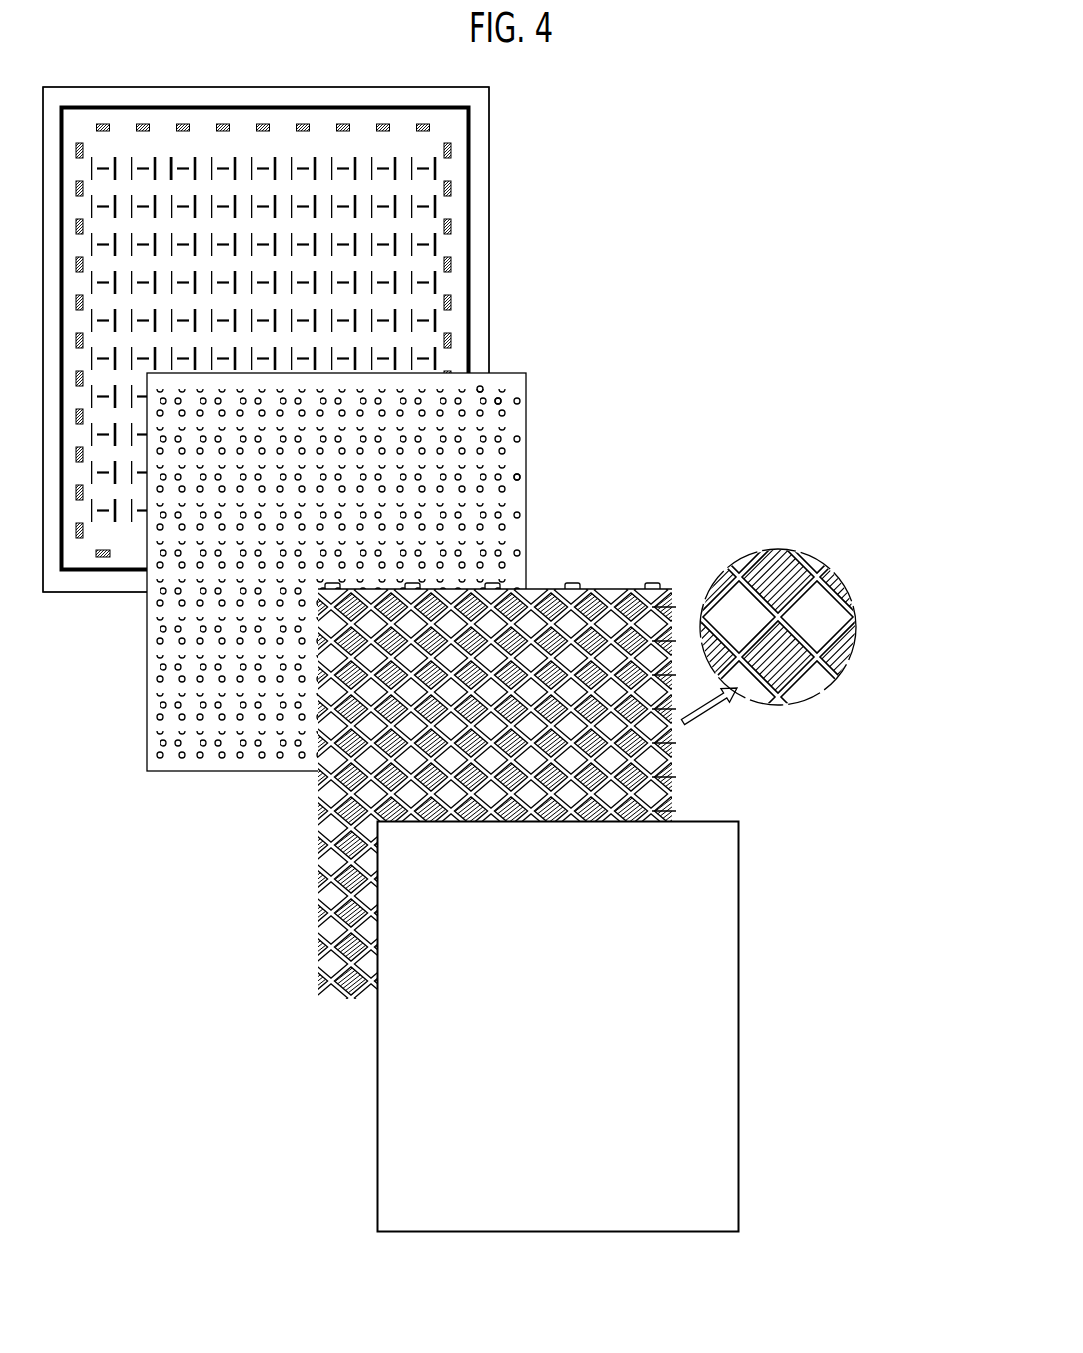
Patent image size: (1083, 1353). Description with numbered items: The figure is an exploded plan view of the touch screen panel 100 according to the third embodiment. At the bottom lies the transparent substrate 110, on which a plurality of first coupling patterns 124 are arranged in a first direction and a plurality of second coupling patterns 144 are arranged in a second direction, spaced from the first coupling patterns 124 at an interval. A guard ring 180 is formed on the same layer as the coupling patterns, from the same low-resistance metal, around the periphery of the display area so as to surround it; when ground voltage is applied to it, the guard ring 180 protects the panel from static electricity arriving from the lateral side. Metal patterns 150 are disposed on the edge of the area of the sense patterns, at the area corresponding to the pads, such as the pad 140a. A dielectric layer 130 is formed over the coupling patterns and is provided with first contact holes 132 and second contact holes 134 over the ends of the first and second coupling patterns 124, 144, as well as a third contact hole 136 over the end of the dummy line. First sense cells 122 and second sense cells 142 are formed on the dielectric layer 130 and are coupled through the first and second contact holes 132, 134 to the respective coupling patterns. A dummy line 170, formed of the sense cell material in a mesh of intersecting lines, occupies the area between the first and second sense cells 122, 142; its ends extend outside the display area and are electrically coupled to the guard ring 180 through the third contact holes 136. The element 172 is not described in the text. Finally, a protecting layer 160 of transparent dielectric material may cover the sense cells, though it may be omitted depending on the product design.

The touch screen panel 100 is at (594, 147).
The transparent substrate 110 is at (489, 174).
The guard ring 180 is at (470, 231).
The metal patterns 150 is at (423, 124).
The first coupling patterns 124 is at (183, 168).
The second coupling patterns 144 is at (171, 157).
The dielectric layer 130 is at (511, 418).
The first contact holes 132 is at (500, 400).
The second contact holes 134 is at (481, 385).
The third contact hole 136 is at (517, 477).
The pad 140a is at (578, 584).
The edge connection line 172 is at (667, 600).
The protecting layer 160 is at (740, 887).
The dummy line 170 is at (785, 617).
The second sense cells 142 is at (800, 570).
The first sense cells 122 is at (823, 622).